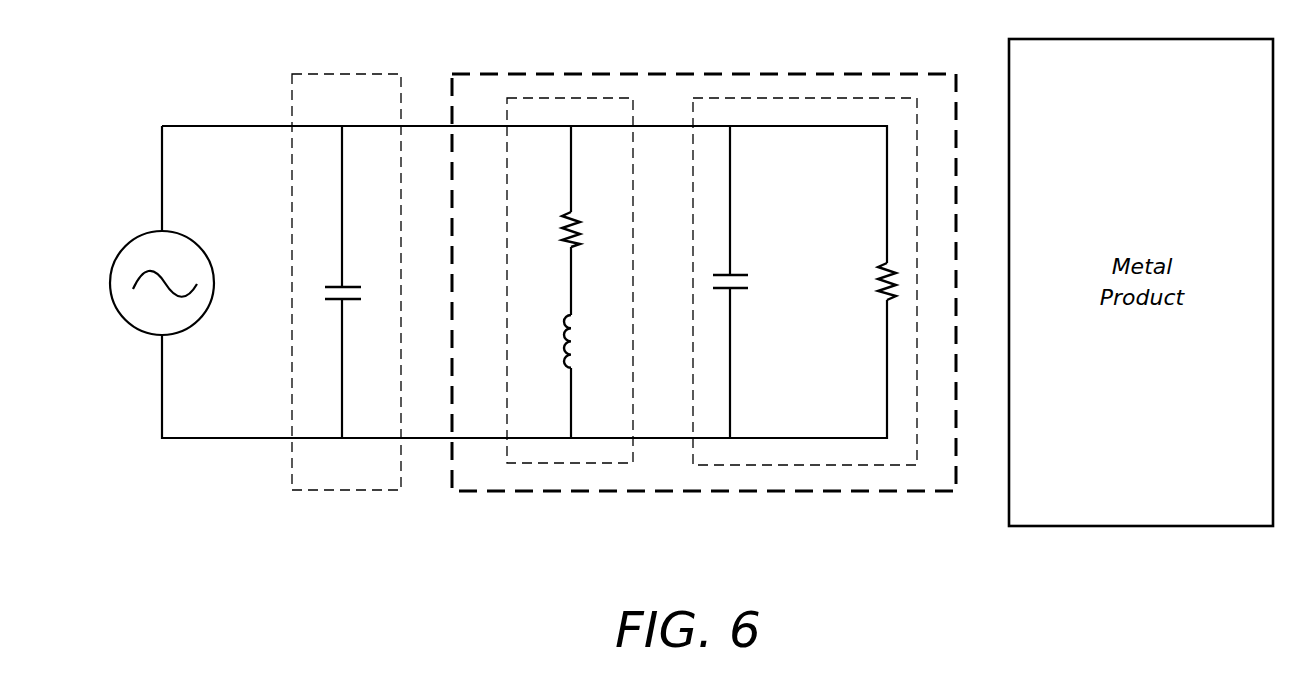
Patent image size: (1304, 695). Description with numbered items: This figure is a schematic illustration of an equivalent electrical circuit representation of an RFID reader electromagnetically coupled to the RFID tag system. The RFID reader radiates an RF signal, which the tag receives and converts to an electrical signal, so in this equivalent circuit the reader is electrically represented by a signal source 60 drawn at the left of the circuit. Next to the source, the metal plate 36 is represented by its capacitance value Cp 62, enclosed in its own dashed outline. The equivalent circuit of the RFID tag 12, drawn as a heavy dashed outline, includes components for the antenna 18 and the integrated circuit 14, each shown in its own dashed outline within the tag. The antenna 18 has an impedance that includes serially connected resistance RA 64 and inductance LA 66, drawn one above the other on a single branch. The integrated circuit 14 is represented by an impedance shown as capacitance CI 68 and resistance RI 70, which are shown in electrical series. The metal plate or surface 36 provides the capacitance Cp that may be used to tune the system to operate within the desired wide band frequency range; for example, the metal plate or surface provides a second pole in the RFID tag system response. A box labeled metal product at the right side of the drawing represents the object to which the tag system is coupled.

The signal source 60 is at (146, 318).
The capacitance Cp 62 is at (345, 287).
The resistance RA 64 is at (565, 218).
The inductance LA 66 is at (568, 316).
The capacitance CI 68 is at (745, 275).
The resistance RI 70 is at (880, 263).
The metal plate 36 is at (344, 492).
The antenna 18 is at (553, 465).
The integrated circuit 14 is at (758, 467).
The RFID tag 12 is at (882, 493).